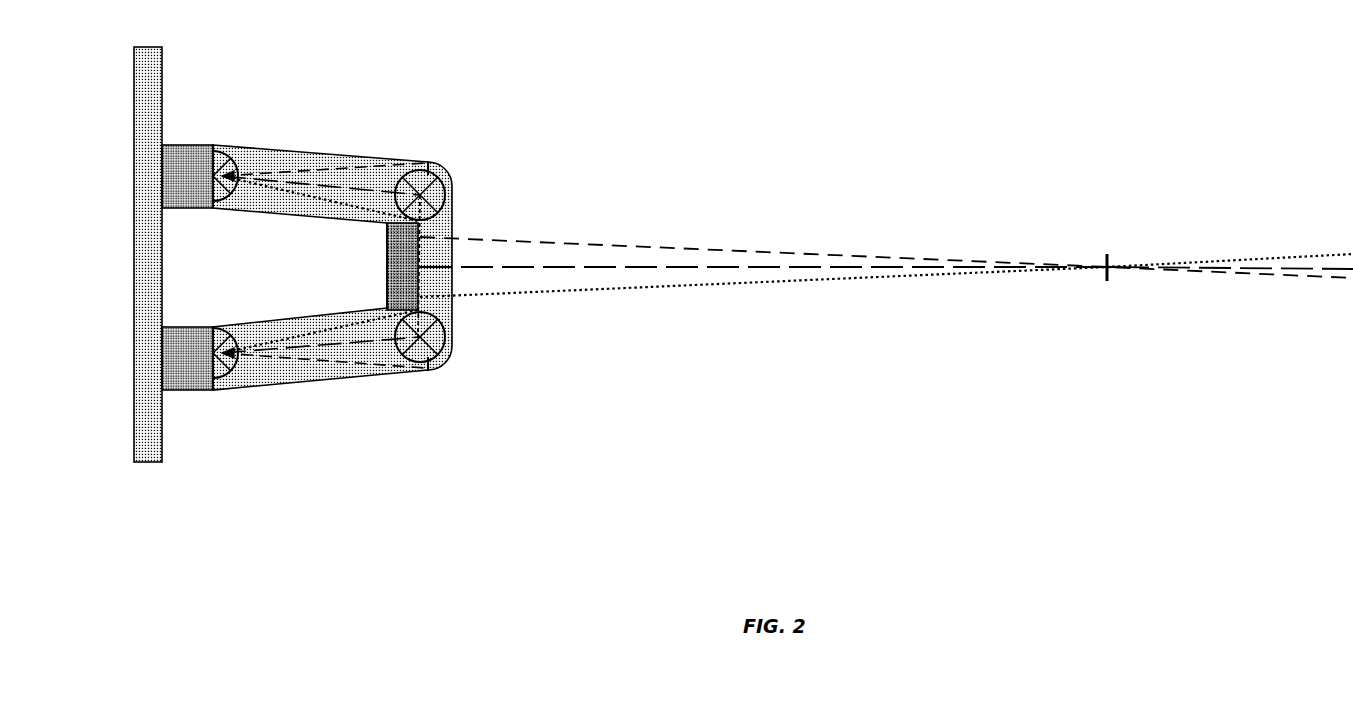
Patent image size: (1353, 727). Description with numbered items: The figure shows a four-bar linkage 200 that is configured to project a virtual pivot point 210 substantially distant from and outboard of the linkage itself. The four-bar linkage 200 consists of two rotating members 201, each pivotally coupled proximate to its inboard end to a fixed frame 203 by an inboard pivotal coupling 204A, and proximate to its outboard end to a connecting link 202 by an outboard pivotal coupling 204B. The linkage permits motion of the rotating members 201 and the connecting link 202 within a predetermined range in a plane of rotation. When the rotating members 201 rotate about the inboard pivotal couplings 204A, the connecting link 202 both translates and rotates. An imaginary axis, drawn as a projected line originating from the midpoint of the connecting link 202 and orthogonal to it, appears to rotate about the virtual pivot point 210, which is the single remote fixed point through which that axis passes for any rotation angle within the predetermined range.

The four-bar linkage 200 is at (355, 254).
The rotating members 201 is at (270, 163).
The connecting link 202 is at (388, 247).
The fixed frame 203 is at (152, 272).
The inboard pivotal coupling 204A is at (223, 163).
The outboard pivotal coupling 204B is at (440, 200).
The virtual pivot point 210 is at (1110, 262).